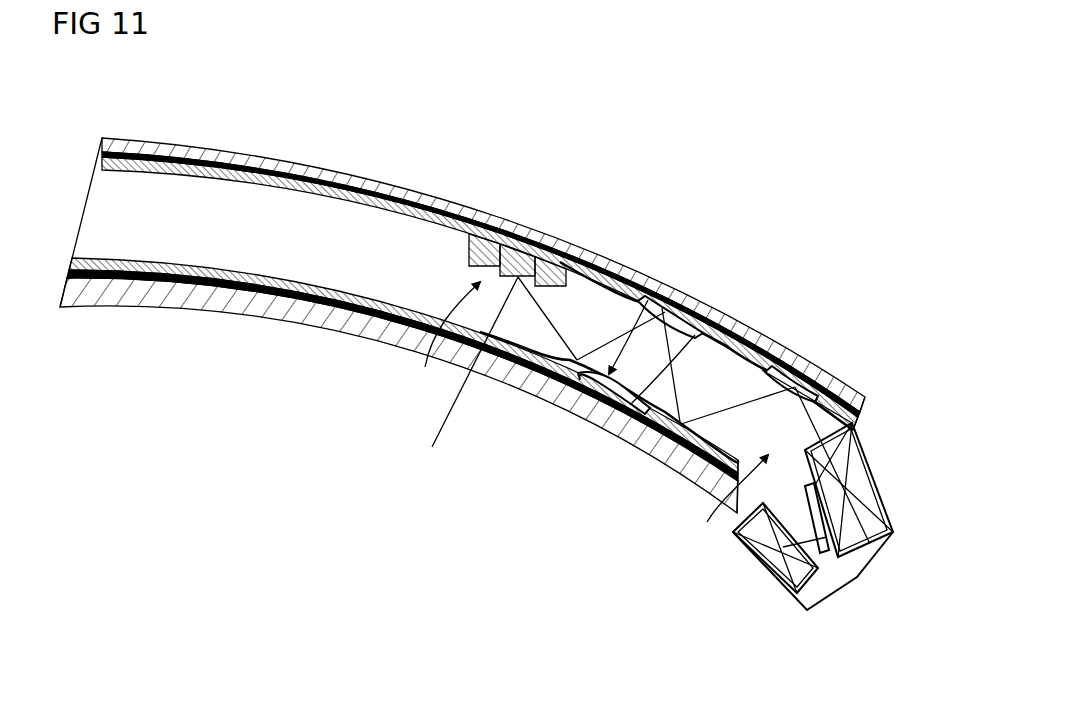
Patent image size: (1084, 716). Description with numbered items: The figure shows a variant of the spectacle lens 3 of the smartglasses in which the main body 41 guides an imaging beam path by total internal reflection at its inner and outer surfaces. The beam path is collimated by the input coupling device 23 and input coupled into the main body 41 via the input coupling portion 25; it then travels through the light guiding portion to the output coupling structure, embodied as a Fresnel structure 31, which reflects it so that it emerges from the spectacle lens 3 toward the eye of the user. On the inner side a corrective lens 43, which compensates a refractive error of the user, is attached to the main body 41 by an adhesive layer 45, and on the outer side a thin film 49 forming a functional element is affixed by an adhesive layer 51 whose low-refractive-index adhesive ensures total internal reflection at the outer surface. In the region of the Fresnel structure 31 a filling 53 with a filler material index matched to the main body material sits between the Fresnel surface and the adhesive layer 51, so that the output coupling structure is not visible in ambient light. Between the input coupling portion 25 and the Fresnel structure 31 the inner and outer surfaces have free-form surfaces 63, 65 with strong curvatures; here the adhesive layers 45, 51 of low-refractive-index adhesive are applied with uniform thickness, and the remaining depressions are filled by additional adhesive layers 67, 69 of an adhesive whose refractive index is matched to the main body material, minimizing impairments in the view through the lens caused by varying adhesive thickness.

The spectacle lens 3 is at (436, 108).
The input coupling device 23 is at (888, 458).
The input coupling portion 25 is at (729, 505).
The Fresnel structure 31 is at (445, 341).
The main body 41 is at (462, 260).
The corrective lens 43 is at (399, 385).
The adhesive layer 45 is at (177, 279).
The thin film 49 is at (165, 193).
The adhesive layer 51 is at (707, 332).
The filling 53 is at (528, 238).
The free-form surface 63 is at (603, 418).
The free-form surface 65 is at (692, 335).
The additional adhesive layer 67 is at (243, 303).
The additional adhesive layer 69 is at (756, 336).